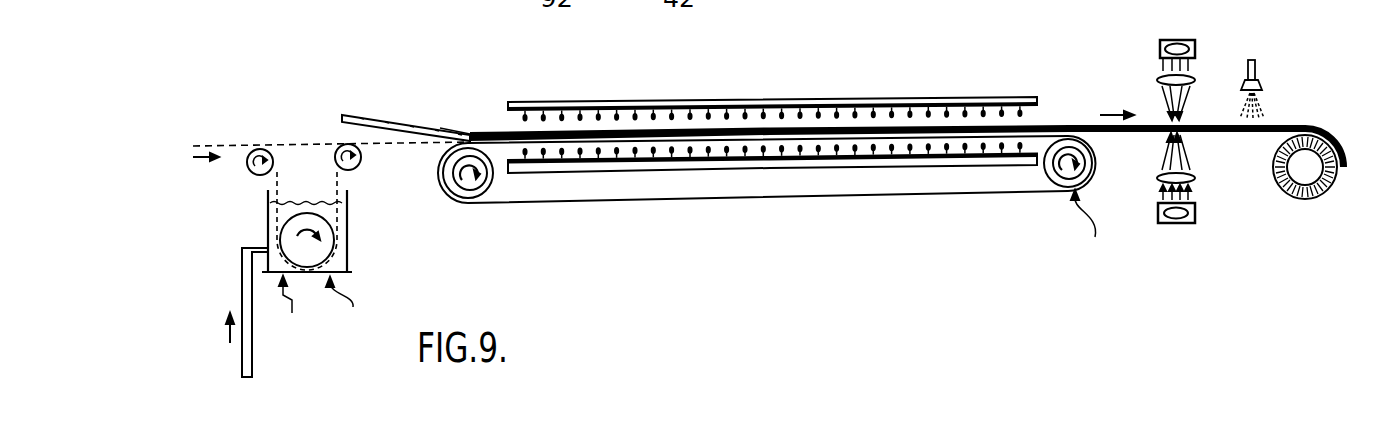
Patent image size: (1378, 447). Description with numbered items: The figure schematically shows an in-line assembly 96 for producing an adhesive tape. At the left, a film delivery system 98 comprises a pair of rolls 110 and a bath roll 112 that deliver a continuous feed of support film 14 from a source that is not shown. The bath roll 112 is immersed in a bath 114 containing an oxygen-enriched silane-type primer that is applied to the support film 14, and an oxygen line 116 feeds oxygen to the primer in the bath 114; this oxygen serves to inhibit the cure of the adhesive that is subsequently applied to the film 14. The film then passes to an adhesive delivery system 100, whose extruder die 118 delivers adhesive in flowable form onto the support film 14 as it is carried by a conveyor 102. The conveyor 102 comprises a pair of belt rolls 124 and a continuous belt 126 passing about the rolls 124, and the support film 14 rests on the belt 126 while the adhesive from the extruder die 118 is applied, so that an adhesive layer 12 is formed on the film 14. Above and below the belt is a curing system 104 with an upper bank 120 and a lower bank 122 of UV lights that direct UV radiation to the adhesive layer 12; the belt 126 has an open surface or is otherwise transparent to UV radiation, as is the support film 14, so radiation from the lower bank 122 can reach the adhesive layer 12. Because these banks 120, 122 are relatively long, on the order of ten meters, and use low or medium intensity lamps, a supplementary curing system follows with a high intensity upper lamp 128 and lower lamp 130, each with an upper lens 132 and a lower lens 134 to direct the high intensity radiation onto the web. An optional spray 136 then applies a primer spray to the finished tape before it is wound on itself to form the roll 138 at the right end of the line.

The adhesive layer 12 is at (1075, 125).
The support film 14 is at (230, 146).
The assembly 96 is at (772, 128).
The film delivery system 98 is at (349, 308).
The adhesive delivery system 100 is at (394, 102).
The conveyor 102 is at (1090, 228).
The curing system 104 is at (771, 163).
The rolls 110 is at (255, 150).
The bath roll 112 is at (348, 252).
The bath 114 is at (297, 312).
The oxygen line 116 is at (253, 360).
The extruder die 118 is at (444, 130).
The upper bank of UV lights 120 is at (880, 100).
The lower bank of UV lights 122 is at (1005, 163).
The belt rolls 124 is at (458, 184).
The continuous belt 126 is at (888, 190).
The upper lamp 128 is at (1203, 61).
The lower lamp 130 is at (1203, 200).
The upper lens 132 is at (1195, 78).
The lower lens 134 is at (1195, 178).
The spray 136 is at (1256, 67).
The roll 138 is at (1331, 198).